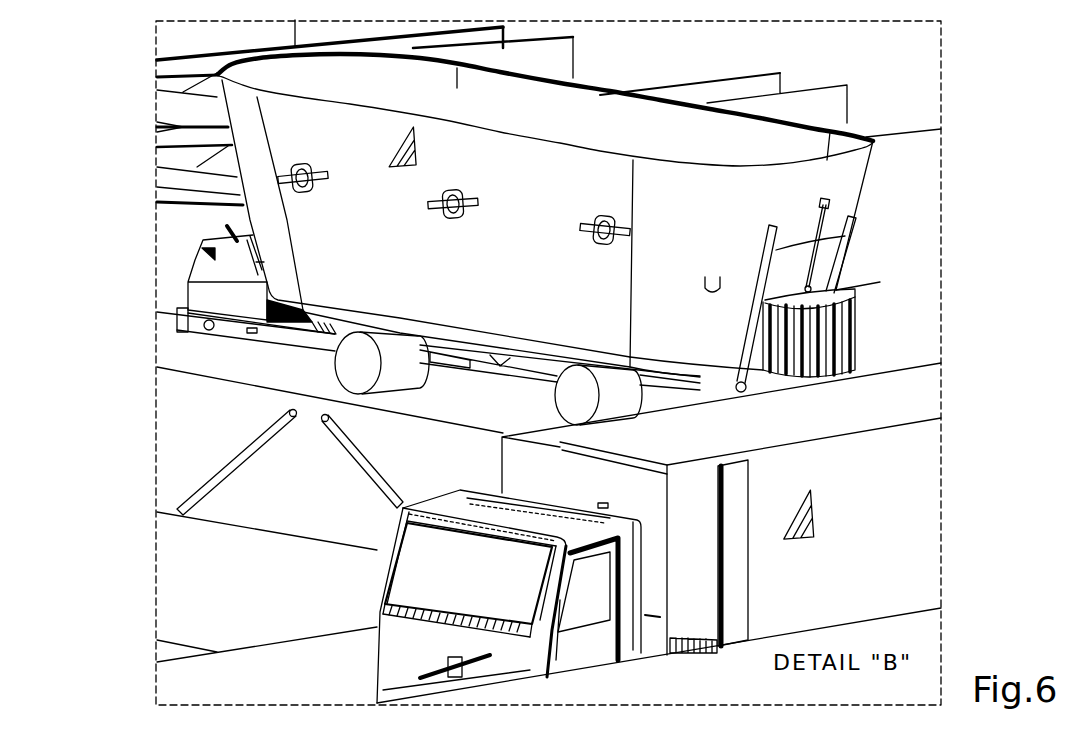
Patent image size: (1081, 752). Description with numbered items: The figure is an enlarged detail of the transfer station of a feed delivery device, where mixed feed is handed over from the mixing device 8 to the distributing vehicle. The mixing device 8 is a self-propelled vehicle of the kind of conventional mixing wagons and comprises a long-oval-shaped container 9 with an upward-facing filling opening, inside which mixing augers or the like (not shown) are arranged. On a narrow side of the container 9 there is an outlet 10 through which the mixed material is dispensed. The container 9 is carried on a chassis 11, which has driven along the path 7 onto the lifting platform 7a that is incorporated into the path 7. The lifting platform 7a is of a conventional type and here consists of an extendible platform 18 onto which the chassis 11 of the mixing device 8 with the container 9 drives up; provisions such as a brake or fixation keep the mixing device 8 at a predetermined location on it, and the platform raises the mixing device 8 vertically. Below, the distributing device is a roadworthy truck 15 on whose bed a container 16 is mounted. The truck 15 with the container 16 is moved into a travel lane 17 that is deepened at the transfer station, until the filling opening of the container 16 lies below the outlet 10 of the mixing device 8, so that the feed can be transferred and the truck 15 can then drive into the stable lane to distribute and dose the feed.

The path 7 is at (192, 352).
The lifting platform 7a is at (278, 490).
The mixing device 8 is at (869, 88).
The container 9 is at (722, 222).
The outlet 10 is at (857, 323).
The chassis 11 is at (484, 398).
The truck 15 is at (440, 562).
The container 16 is at (874, 473).
The travel lane 17 is at (313, 681).
The extendible platform 18 is at (327, 381).